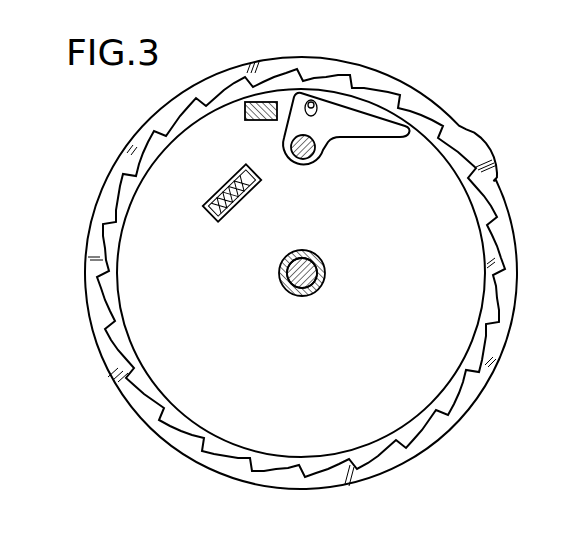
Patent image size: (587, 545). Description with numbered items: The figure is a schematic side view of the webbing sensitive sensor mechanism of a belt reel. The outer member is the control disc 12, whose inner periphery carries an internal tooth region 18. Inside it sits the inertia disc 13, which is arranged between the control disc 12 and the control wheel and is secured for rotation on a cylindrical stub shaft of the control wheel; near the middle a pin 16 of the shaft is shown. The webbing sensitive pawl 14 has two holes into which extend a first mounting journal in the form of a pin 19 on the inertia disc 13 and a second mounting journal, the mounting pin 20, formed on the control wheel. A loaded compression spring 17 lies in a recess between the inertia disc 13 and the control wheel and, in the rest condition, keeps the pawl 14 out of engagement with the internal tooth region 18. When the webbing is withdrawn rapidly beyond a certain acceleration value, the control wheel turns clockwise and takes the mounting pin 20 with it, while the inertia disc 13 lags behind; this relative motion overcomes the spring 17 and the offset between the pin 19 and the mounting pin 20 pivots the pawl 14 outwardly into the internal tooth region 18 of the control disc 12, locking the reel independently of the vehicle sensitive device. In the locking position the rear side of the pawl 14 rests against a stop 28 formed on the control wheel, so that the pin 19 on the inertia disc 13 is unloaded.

The control disc 12 is at (471, 390).
The inertia disc 13 is at (457, 211).
The webbing sensitive pawl 14 is at (377, 126).
The pin of the shaft 16 is at (282, 283).
The compression spring 17 is at (233, 200).
The internal tooth region 18 is at (497, 253).
The pin on the inertia disc 19 is at (305, 113).
The mounting pin on the control wheel 20 is at (310, 152).
The stop 28 is at (245, 121).